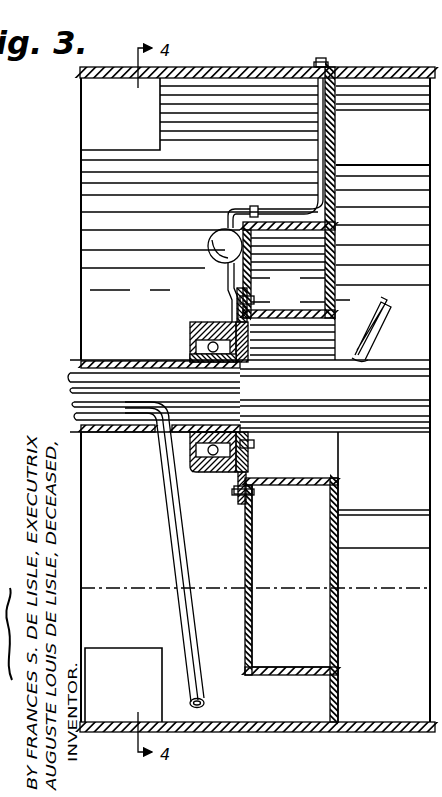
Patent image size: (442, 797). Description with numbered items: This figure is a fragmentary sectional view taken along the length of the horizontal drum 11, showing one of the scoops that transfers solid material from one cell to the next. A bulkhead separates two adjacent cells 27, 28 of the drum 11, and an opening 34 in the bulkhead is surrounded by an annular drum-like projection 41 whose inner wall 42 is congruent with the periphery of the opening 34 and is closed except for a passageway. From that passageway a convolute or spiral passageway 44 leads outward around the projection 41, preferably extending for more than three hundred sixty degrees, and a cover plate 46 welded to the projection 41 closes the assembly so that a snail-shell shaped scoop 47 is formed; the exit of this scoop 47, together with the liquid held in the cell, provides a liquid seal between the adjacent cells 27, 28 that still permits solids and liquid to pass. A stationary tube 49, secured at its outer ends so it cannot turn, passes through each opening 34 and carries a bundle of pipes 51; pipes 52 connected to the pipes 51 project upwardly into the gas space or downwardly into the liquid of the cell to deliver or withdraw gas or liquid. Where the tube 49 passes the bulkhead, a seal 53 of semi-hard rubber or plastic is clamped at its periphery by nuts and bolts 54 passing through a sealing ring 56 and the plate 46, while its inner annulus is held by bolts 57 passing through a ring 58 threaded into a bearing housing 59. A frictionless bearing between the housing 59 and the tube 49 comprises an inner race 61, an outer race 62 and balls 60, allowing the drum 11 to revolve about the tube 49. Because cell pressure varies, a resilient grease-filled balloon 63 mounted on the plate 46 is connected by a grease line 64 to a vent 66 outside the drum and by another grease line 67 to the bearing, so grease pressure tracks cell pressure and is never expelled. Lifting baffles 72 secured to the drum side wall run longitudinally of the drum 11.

The drum 11 is at (247, 66).
The cell 27 is at (282, 141).
The cell 28 is at (402, 206).
The opening 34 is at (320, 446).
The drum-like projection 41 is at (338, 296).
The inner wall 42 is at (288, 490).
The spiral passageway 44 is at (336, 250).
The cover plate 46 is at (247, 592).
The scoop 47 is at (290, 678).
The tube 49 is at (350, 396).
The pipes 51 is at (106, 420).
The pipes 52 is at (170, 556).
The seal 53 is at (250, 470).
The nuts and bolts 54 is at (234, 492).
The sealing ring 56 is at (236, 500).
The bolts 57 is at (268, 341).
The ring 58 is at (254, 312).
The bearing housing 59 is at (226, 322).
The balls 60 is at (200, 472).
The inner race 61 is at (190, 355).
The outer race 62 is at (190, 334).
The balloon 63 is at (215, 238).
The grease line 64 is at (317, 172).
The vent 66 is at (321, 61).
The grease line 67 is at (226, 290).
The lifting baffles 72 is at (130, 681).